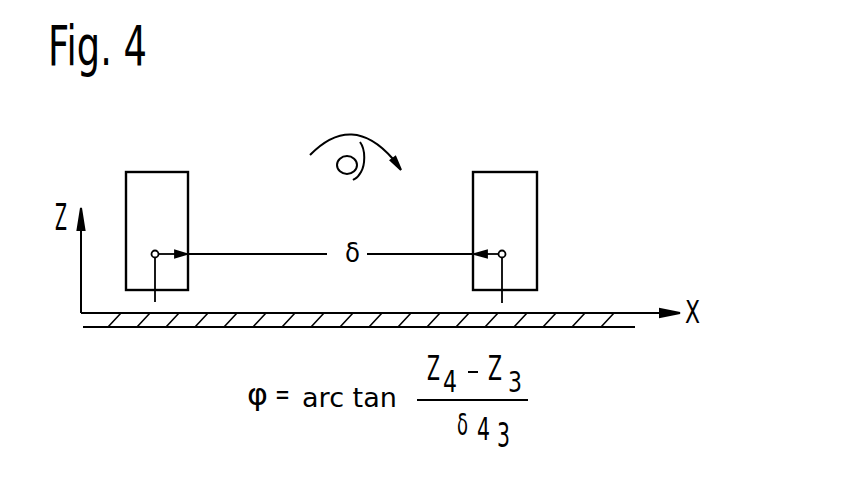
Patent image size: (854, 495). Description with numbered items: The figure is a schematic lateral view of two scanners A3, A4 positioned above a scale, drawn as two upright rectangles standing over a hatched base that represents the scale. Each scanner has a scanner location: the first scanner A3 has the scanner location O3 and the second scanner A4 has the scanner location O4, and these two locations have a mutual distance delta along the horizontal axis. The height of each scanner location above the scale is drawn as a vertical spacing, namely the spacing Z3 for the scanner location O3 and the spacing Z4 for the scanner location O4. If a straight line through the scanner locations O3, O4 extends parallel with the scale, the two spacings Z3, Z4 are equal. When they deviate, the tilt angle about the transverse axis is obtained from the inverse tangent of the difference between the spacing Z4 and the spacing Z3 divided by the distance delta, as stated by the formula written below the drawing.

The scanner A3 is at (181, 201).
The scanner A4 is at (527, 212).
The scanner location O3 is at (165, 230).
The scanner location O4 is at (497, 229).
The spacing of scanner location Z3 is at (157, 298).
The spacing of scanner location Z4 is at (502, 300).